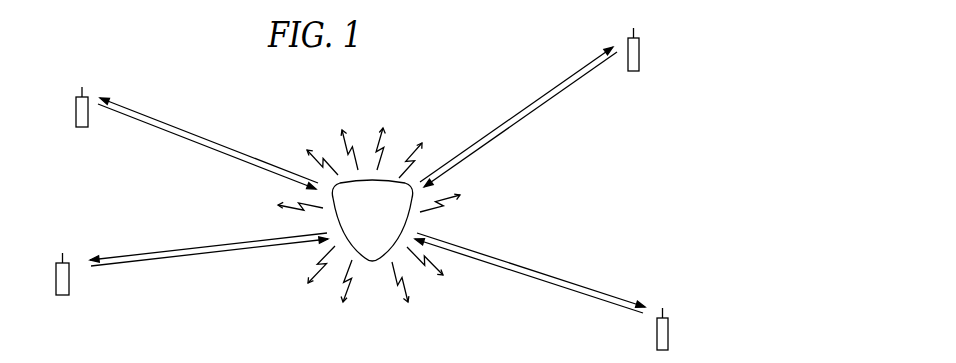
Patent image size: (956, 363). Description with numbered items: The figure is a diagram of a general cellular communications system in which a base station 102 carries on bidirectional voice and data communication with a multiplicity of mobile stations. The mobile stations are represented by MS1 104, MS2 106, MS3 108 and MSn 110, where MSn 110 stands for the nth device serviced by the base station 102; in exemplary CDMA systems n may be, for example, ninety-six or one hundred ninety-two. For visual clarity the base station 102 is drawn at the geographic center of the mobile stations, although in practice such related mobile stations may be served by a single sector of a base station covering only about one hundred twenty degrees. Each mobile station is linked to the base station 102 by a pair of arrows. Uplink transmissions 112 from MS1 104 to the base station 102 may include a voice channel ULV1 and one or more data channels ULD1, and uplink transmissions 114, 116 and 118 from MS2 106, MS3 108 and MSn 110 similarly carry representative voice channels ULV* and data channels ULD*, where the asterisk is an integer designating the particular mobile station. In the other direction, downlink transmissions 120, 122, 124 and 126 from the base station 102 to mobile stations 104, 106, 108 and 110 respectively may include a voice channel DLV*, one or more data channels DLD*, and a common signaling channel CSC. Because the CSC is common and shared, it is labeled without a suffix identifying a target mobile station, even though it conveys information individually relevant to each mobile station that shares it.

The base station 102 is at (367, 260).
The mobile station MS1 104 is at (56, 288).
The mobile station MS2 106 is at (76, 120).
The mobile station MS3 108 is at (639, 68).
The mobile station MSn 110 is at (668, 343).
The uplink transmissions 112 is at (123, 263).
The uplink transmissions 114 is at (105, 109).
The uplink transmissions 116 is at (582, 77).
The uplink transmissions 118 is at (590, 297).
The downlink transmissions 120 is at (107, 257).
The downlink transmissions 122 is at (123, 105).
The downlink transmissions 124 is at (587, 62).
The downlink transmissions 126 is at (613, 296).